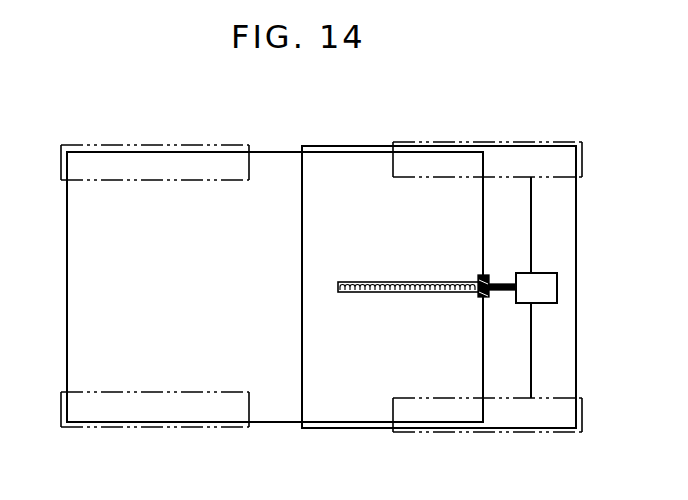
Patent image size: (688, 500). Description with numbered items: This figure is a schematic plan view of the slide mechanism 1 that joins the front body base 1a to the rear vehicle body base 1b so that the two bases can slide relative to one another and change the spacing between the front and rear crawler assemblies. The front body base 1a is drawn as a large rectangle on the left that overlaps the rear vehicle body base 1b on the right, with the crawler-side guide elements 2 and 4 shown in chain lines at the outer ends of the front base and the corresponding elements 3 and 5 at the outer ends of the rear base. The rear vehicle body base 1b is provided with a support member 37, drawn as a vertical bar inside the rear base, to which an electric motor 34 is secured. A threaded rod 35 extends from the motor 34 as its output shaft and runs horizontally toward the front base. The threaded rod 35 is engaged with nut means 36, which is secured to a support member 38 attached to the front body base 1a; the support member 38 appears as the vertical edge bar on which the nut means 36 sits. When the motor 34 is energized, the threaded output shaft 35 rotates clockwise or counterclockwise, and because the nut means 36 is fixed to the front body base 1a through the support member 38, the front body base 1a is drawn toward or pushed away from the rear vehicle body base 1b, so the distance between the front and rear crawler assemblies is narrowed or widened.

The stage assembly 1 is at (278, 140).
The front body base 1a is at (281, 422).
The rear vehicle body base 1b is at (576, 294).
The guide roller 2 is at (142, 145).
The guide roller 3 is at (527, 143).
The guide roller 4 is at (150, 427).
The guide roller 5 is at (522, 432).
The electric motor 34 is at (546, 302).
The threaded rod 35 is at (373, 282).
The nut means 36 is at (478, 278).
The support member 37 is at (531, 210).
The support member 38 is at (483, 205).